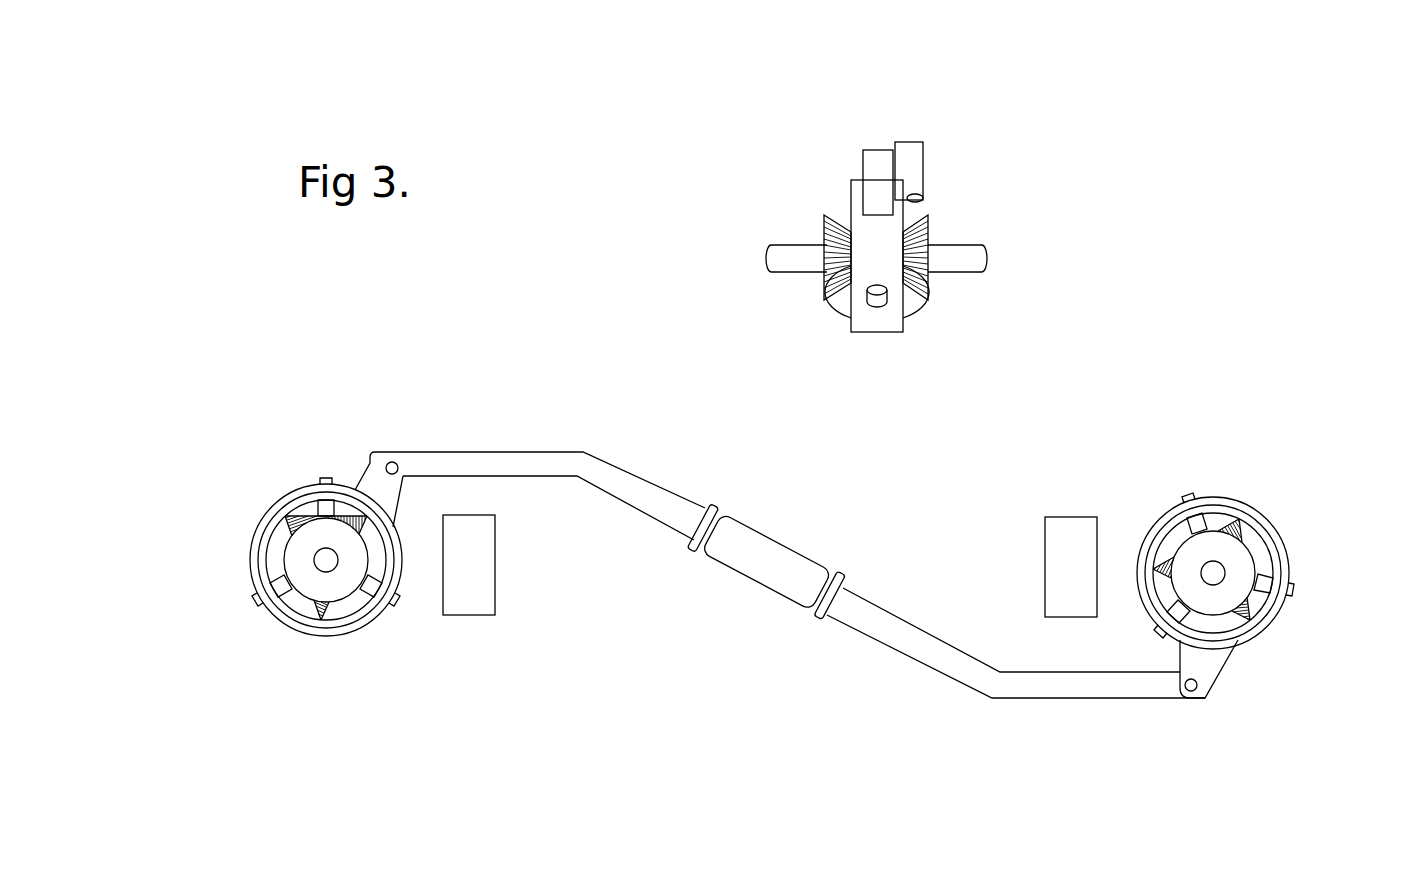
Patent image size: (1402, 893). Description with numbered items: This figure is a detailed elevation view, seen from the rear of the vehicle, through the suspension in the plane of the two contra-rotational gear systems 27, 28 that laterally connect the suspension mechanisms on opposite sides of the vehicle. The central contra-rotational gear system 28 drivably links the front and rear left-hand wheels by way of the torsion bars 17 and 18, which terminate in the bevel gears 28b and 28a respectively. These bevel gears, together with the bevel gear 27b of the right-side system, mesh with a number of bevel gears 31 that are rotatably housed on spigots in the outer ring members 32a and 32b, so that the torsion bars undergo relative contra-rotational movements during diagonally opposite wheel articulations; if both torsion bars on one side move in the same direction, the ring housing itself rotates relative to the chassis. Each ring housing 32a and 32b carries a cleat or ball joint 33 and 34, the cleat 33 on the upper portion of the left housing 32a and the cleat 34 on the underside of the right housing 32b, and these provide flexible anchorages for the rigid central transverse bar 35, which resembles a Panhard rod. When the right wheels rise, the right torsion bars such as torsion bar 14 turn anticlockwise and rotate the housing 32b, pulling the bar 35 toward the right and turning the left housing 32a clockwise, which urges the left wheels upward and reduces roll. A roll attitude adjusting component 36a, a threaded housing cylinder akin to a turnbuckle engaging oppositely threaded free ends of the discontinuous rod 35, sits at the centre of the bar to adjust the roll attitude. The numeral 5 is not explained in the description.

The frame member 5 is at (497, 547).
The torsion bar 14 is at (1223, 565).
The torsion bar 17 is at (766, 256).
The torsion bar 18 is at (988, 253).
The gear system 27 is at (1214, 458).
The bevel gear 27b is at (1233, 633).
The gear system 28 is at (1060, 188).
The bevel gear 28a is at (930, 230).
The bevel gear 28b is at (827, 224).
The bevel gear 31 is at (840, 299).
The ring housing 32a is at (880, 335).
The ring housing 32b is at (1229, 495).
The cleat 33 is at (863, 170).
The cleat 34 is at (1218, 675).
The central transverse bar 35 is at (923, 157).
The roll attitude adjusting component 36a is at (781, 600).